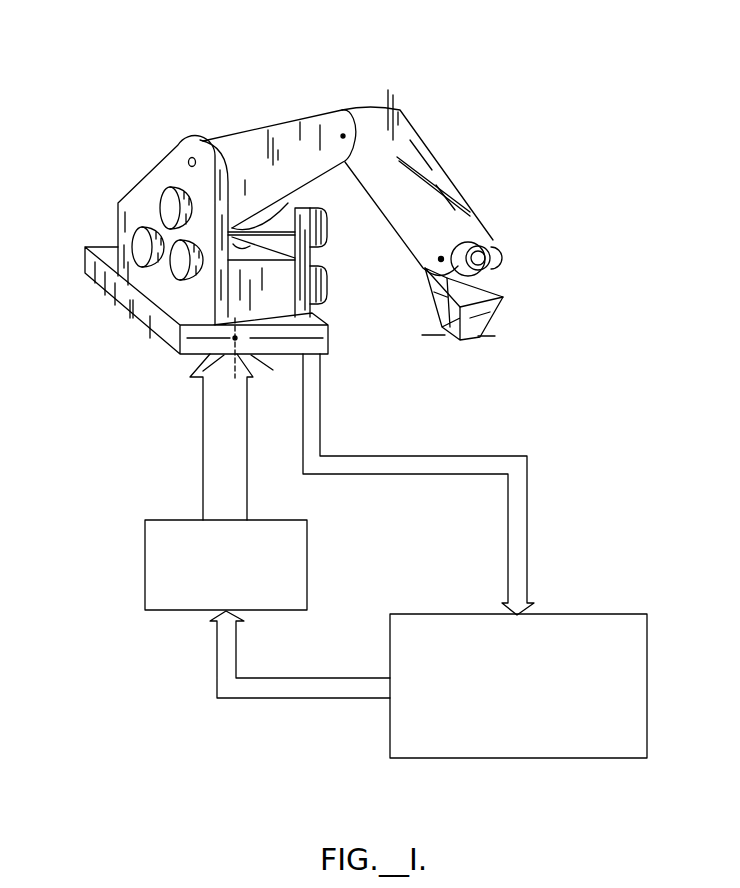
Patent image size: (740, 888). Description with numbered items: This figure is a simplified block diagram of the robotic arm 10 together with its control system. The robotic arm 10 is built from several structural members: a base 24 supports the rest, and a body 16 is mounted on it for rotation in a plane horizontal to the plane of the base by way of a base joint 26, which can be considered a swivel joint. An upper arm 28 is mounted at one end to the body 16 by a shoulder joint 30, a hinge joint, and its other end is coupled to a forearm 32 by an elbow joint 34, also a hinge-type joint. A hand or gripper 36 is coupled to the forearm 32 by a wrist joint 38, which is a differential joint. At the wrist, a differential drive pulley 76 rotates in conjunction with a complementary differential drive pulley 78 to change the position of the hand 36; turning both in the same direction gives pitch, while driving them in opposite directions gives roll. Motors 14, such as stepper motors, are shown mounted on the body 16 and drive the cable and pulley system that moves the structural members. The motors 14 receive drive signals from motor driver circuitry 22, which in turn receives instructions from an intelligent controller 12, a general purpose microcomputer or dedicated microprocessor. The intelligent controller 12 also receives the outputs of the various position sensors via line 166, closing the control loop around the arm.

The robotic arm 10 is at (426, 36).
The intelligent controller 12 is at (607, 614).
The motors 14 is at (165, 211).
The body 16 is at (150, 187).
The motor driver circuitry 22 is at (278, 520).
The base 24 is at (104, 302).
The base joint 26 is at (298, 249).
The upper arm 28 is at (298, 106).
The shoulder joint 30 is at (188, 160).
The forearm 32 is at (472, 190).
The elbow joint 34 is at (343, 134).
The hand or gripper 36 is at (514, 328).
The wrist joint 38 is at (482, 278).
The differential drive pulley 76 is at (496, 244).
The complementary differential drive pulley 78 is at (470, 241).
The line 166 is at (527, 514).